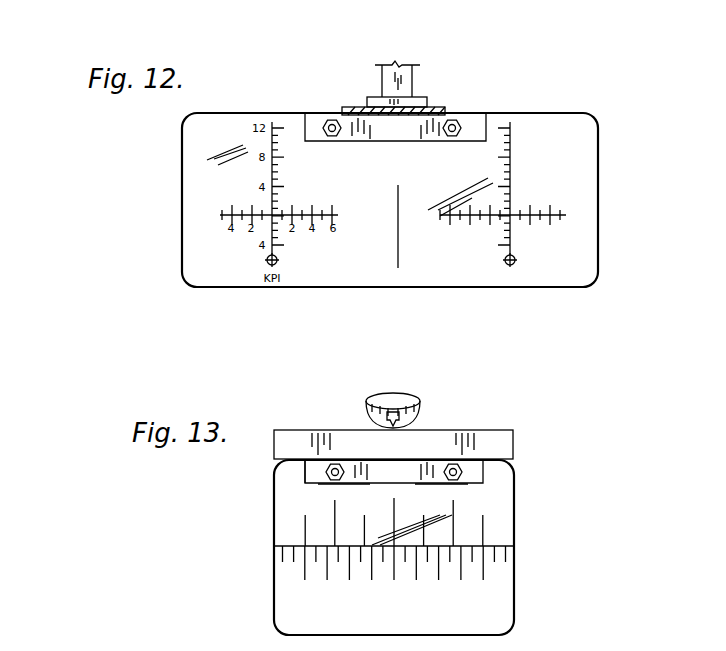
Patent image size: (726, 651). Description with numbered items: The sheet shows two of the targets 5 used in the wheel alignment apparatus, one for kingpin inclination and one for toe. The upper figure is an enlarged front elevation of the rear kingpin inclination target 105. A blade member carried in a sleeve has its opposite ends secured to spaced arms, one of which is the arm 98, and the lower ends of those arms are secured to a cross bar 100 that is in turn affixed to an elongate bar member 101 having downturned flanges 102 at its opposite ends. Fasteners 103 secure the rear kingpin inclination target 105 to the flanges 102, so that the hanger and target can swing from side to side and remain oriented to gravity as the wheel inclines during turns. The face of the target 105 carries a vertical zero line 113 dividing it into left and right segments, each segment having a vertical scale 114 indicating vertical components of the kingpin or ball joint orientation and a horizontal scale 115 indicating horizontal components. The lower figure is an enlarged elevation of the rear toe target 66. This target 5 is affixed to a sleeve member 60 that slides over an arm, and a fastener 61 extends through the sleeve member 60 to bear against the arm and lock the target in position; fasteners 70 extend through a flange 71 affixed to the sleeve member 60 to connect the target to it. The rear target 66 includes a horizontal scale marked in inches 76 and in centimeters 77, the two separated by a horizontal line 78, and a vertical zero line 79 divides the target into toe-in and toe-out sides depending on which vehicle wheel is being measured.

In FIG. 12, the arm 98 is at (412, 83).
In FIG. 12, the cross bar 100 is at (367, 100).
In FIG. 12, the elongate bar member 101 is at (445, 113).
In FIG. 12, the downturned flange 102 is at (486, 120).
In FIG. 12, the fastener 103 is at (327, 121).
In FIG. 12, the rear kingpin inclination target 105 is at (598, 256).
In FIG. 12, the vertical zero line 113 is at (399, 236).
In FIG. 12, the vertical scale 114 is at (512, 177).
In FIG. 12, the horizontal scale 115 is at (554, 215).
In FIG. 13, the target 5 is at (515, 485).
In FIG. 13, the sleeve member 60 is at (350, 430).
In FIG. 13, the fastener 61 is at (422, 408).
In FIG. 13, the rear target 66 is at (515, 600).
In FIG. 13, the fastener 70 is at (457, 466).
In FIG. 13, the flange 71 is at (276, 470).
In FIG. 13, the inch scale 76 is at (484, 531).
In FIG. 13, the centimeter scale 77 is at (305, 562).
In FIG. 13, the horizontal line 78 is at (292, 546).
In FIG. 13, the vertical zero line 79 is at (395, 585).